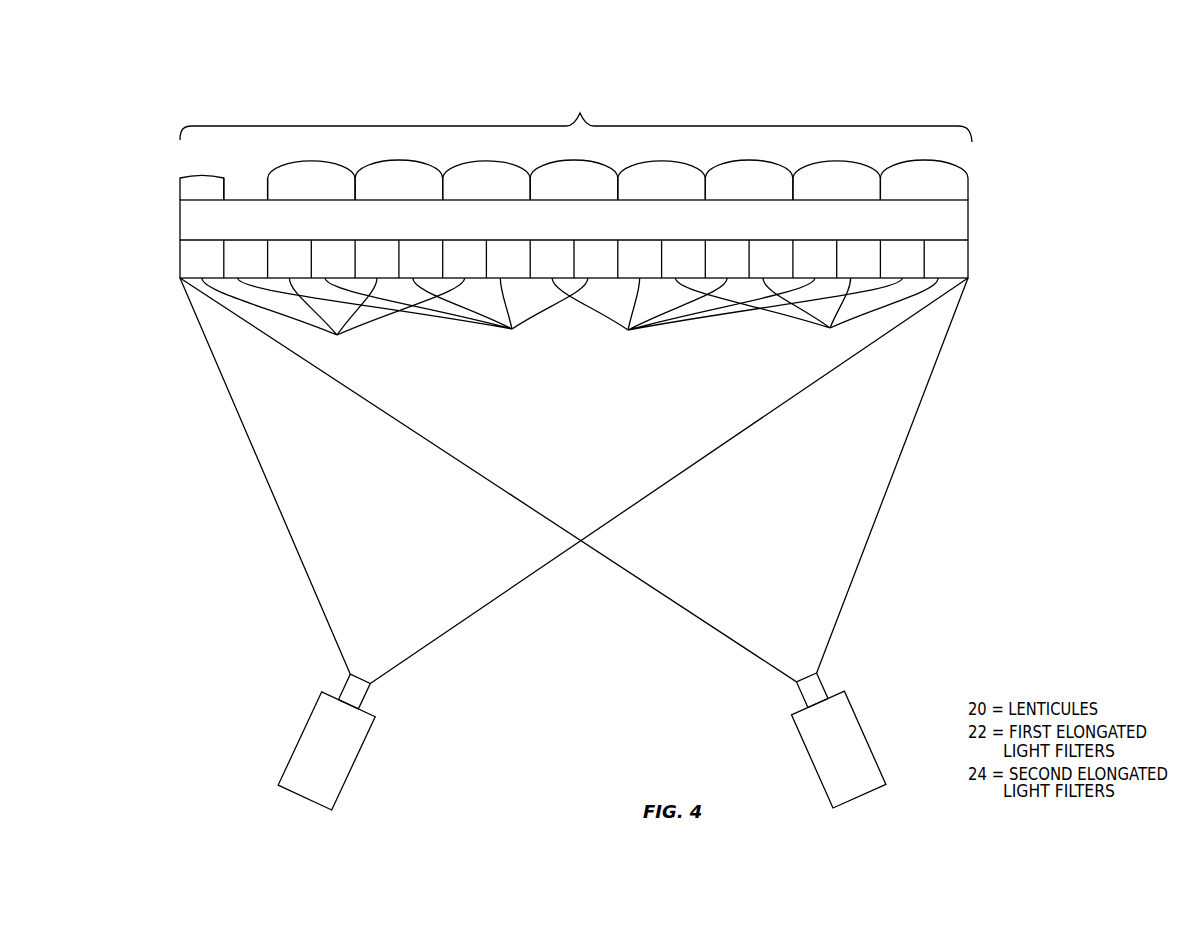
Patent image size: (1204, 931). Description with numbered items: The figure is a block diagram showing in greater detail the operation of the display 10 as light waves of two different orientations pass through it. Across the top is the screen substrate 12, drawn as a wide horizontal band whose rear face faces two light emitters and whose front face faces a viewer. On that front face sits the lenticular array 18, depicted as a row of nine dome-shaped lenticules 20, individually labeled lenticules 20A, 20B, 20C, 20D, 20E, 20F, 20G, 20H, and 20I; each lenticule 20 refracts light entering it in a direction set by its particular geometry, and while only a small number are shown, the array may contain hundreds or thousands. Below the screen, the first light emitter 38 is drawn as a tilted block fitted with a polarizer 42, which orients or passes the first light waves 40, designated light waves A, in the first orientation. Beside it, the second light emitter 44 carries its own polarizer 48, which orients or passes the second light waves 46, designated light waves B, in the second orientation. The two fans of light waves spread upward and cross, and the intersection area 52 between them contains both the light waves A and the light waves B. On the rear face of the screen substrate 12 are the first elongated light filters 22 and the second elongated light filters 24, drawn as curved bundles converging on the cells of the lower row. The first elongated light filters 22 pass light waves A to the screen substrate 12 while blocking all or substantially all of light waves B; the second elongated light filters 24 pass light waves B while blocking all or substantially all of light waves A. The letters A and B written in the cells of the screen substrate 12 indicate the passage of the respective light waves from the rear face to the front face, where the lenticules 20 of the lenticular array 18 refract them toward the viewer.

The display 10 is at (988, 100).
The screen substrate 12 is at (1012, 200).
The lenticular array 18 is at (576, 116).
The lenticules 20 is at (574, 180).
The lenticule 20A is at (211, 186).
The lenticule 20B is at (312, 180).
The lenticule 20C is at (399, 180).
The lenticule 20D is at (487, 180).
The lenticule 20E is at (574, 180).
The lenticule 20F is at (662, 180).
The lenticule 20G is at (749, 180).
The lenticule 20H is at (837, 180).
The lenticule 20I is at (924, 180).
The first elongated light filters 22 is at (552, 319).
The second elongated light filters 24 is at (588, 316).
The first light emitter 38 is at (326, 751).
The first light waves 40 is at (574, 481).
The polarizer 42 is at (367, 688).
The second light emitter 44 is at (839, 749).
The second light waves 46 is at (574, 480).
The polarizer 48 is at (822, 687).
The intersection area 52 is at (583, 452).